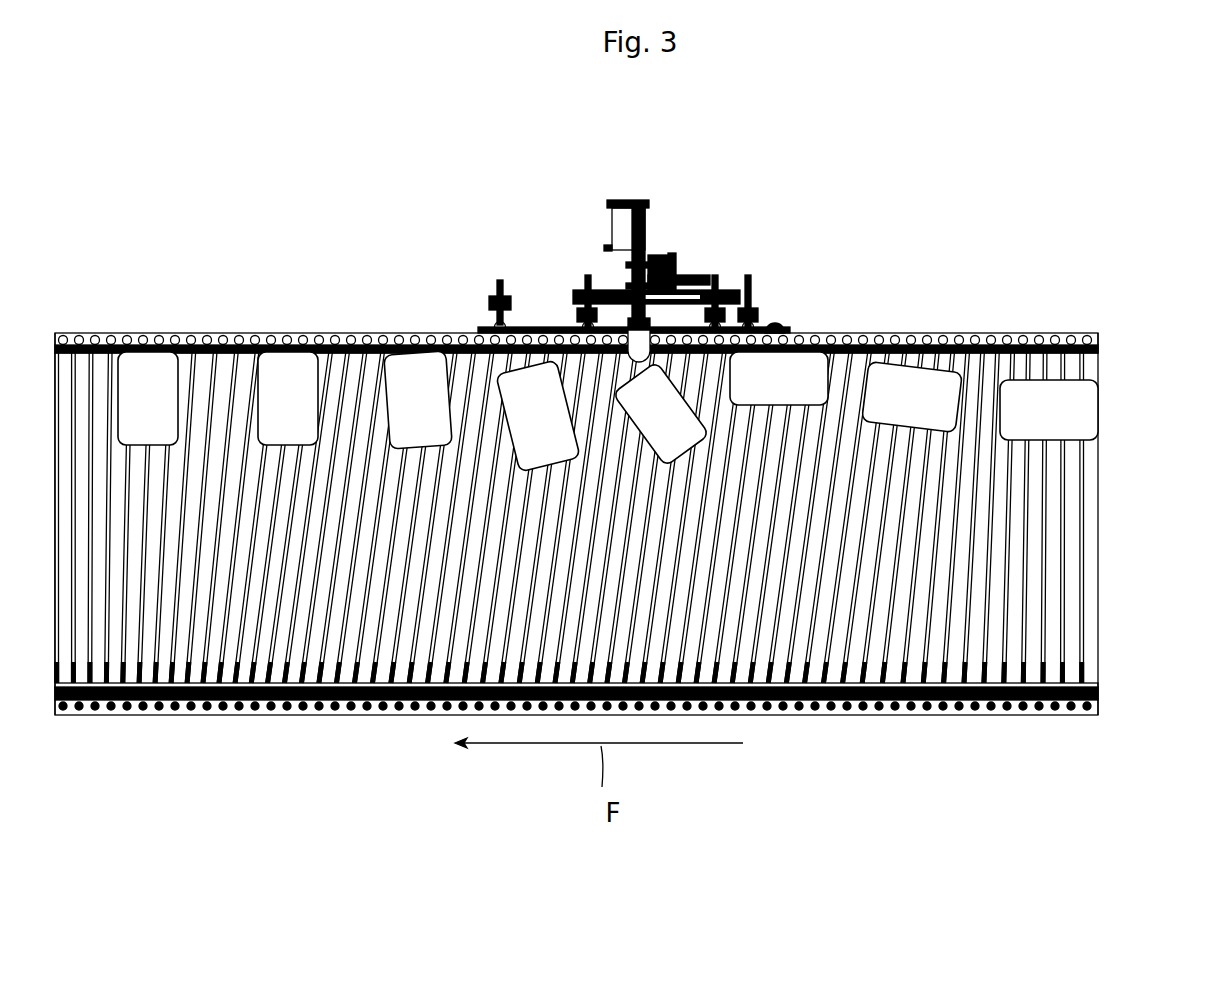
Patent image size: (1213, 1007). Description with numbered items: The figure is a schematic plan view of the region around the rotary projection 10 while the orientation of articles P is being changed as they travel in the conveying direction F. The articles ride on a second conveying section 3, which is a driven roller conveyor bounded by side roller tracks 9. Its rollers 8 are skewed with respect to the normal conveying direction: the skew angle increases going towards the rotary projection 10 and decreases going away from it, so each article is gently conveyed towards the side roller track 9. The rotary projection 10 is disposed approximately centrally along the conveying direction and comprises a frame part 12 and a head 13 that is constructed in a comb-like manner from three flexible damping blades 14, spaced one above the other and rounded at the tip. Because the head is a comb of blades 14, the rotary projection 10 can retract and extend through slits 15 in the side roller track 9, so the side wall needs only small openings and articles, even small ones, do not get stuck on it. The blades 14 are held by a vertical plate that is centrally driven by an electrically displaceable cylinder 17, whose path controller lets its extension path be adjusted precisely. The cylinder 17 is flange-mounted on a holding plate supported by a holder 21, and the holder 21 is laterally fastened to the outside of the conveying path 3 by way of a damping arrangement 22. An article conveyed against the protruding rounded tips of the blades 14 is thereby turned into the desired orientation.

The second conveying section 3 is at (875, 137).
The rollers 8 is at (1067, 549).
The side roller track 9 is at (1022, 335).
The rotary projection 10 is at (754, 161).
The frame part 12 is at (627, 200).
The head 13 is at (655, 315).
The flexible damping blades 14 is at (632, 349).
The slits 15 is at (588, 297).
The electrically displaceable cylinder 17 is at (648, 218).
The holder 21 is at (656, 264).
The damping arrangement 22 is at (689, 282).